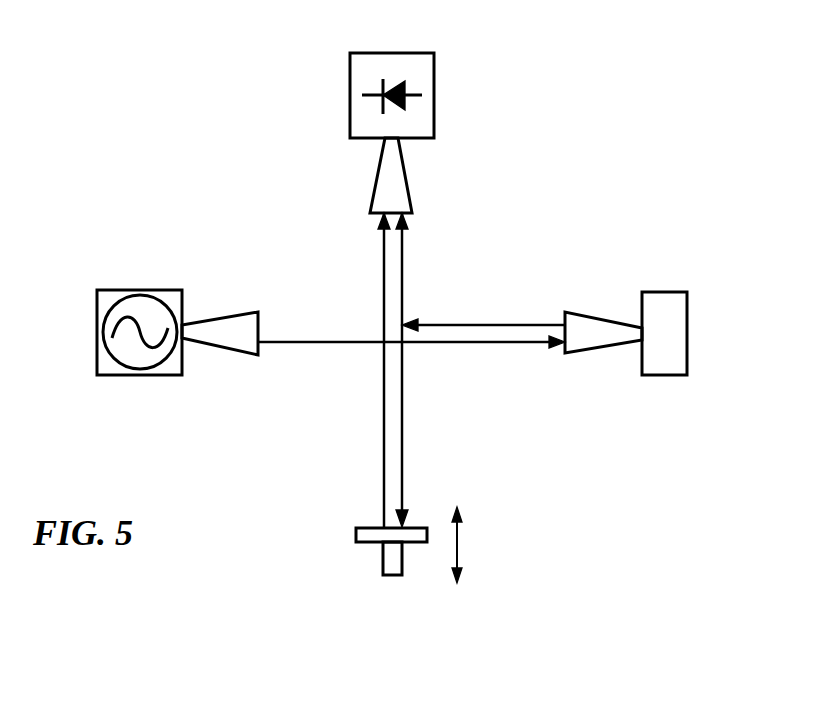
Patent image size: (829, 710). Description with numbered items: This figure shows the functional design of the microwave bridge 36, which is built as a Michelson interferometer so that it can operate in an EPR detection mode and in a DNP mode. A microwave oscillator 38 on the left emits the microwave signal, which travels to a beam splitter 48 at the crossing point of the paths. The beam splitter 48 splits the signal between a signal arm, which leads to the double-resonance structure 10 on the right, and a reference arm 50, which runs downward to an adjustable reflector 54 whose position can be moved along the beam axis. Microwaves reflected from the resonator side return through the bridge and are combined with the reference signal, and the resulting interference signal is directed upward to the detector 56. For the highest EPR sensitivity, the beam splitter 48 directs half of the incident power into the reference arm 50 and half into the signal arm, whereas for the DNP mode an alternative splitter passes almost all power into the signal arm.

The double-resonance structure 10 is at (665, 292).
The microwave bridge 36 is at (248, 135).
The microwave oscillator 38 is at (127, 290).
The beam splitter 48 is at (366, 353).
The reference arm 50 is at (420, 431).
The adjustable reflector 54 is at (462, 545).
The detector 56 is at (434, 73).